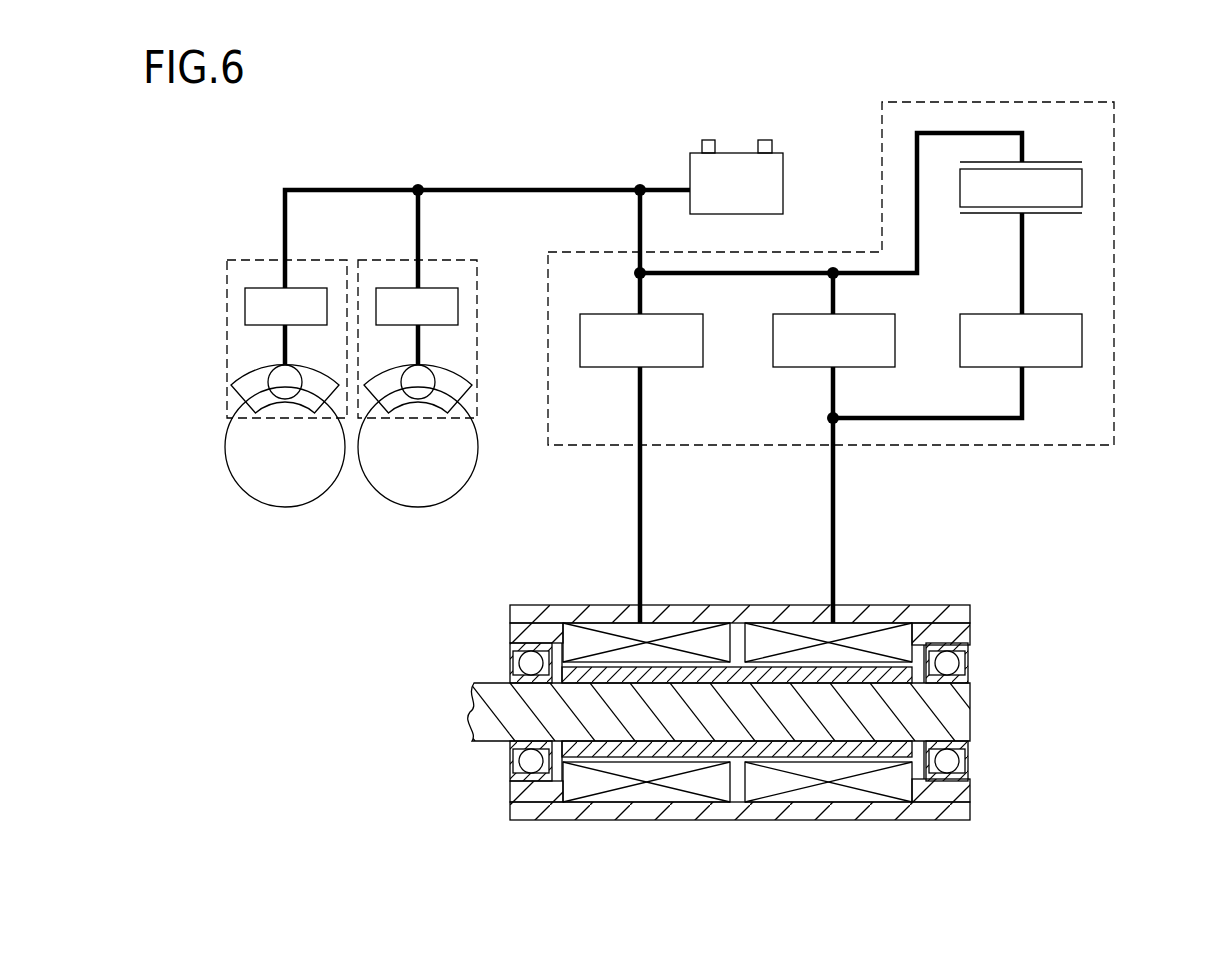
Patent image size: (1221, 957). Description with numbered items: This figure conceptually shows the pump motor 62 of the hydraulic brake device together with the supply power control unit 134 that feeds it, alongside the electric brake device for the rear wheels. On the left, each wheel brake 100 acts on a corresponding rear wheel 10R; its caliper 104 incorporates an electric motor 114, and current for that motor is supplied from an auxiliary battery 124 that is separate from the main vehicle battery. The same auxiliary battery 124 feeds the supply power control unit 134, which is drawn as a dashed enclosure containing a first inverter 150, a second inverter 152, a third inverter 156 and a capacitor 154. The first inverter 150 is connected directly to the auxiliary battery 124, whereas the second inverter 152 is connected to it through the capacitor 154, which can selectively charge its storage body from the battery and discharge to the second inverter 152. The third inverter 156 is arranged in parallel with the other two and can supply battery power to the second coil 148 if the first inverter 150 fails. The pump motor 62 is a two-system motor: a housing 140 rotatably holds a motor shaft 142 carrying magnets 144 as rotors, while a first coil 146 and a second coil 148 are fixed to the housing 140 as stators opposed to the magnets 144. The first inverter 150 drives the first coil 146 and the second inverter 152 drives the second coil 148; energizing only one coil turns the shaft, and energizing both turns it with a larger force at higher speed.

The wheel brake 100 is at (243, 258).
The electric motor 114 is at (278, 377).
The caliper 104 is at (247, 383).
The rear wheel 10R is at (282, 490).
The auxiliary battery 124 is at (777, 178).
The supply power control unit 134 is at (1114, 142).
The capacitor 154 is at (1043, 213).
The first inverter 150 is at (669, 367).
The third inverter 156 is at (875, 367).
The second inverter 152 is at (1043, 367).
The pump motor 62 is at (742, 704).
The housing 140 is at (873, 810).
The magnets 144 is at (738, 745).
The first coil 146 is at (665, 630).
The second coil 148 is at (867, 628).
The motor shaft 142 is at (488, 730).